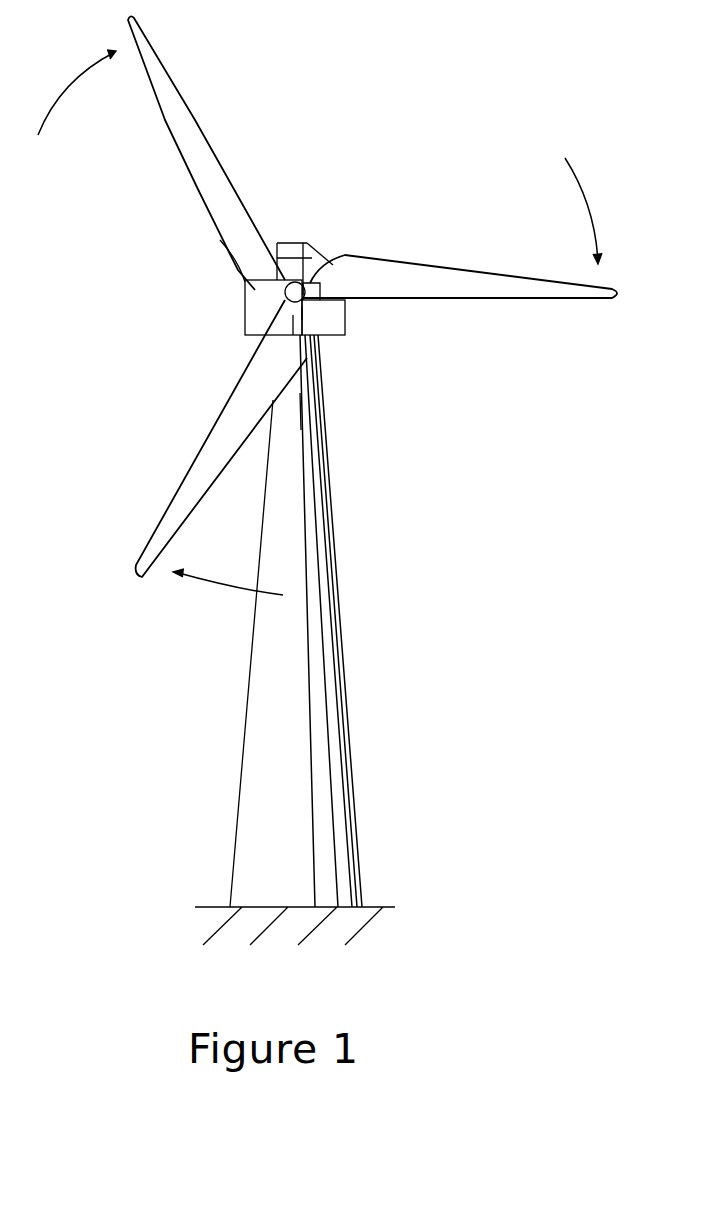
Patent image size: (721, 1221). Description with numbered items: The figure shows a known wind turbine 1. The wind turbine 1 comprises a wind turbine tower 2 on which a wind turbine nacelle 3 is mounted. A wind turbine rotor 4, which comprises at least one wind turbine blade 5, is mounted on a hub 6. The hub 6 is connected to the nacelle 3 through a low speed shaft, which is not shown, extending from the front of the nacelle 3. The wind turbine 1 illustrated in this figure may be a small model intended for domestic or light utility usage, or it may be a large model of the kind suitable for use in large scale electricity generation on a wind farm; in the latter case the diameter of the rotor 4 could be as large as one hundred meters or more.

The wind turbine 1 is at (480, 760).
The wind turbine tower 2 is at (343, 657).
The wind turbine nacelle 3 is at (346, 320).
The wind turbine rotor 4 is at (441, 131).
The wind turbine blade 5 is at (455, 268).
The hub 6 is at (302, 245).